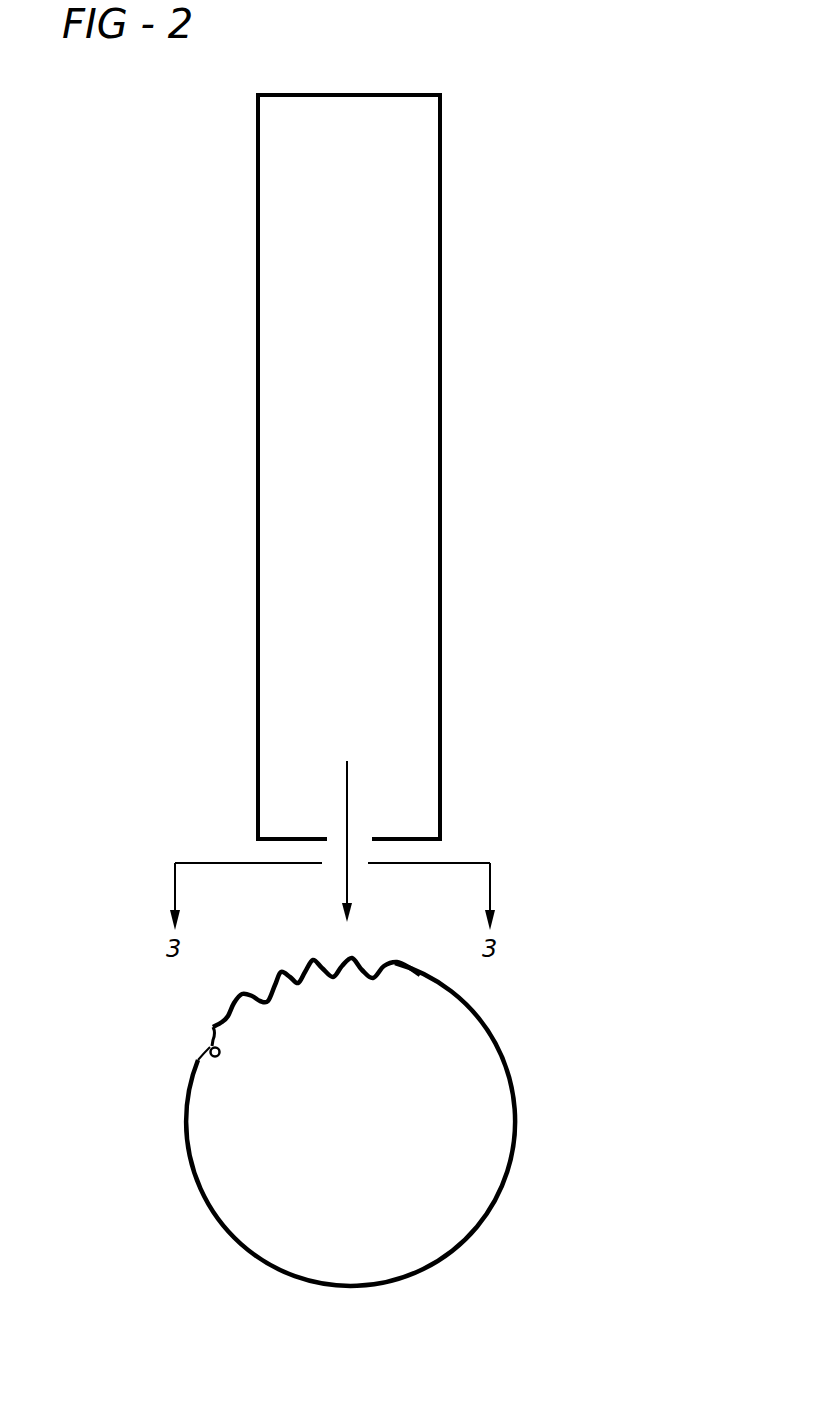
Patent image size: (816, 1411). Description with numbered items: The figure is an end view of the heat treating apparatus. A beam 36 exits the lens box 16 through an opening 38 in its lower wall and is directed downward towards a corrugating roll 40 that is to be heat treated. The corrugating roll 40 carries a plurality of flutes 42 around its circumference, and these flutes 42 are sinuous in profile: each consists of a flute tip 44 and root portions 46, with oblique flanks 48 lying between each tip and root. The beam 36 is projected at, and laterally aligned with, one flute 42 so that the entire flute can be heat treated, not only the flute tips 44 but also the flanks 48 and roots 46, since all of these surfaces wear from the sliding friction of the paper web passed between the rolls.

The lens box 16 is at (452, 308).
The beam 36 is at (348, 887).
The opening 38 is at (372, 839).
The corrugating roll 40 is at (508, 1037).
The flutes 42 is at (257, 972).
The flute tips 44 is at (213, 1027).
The root portions 46 is at (220, 1050).
The flanks 48 is at (208, 1047).